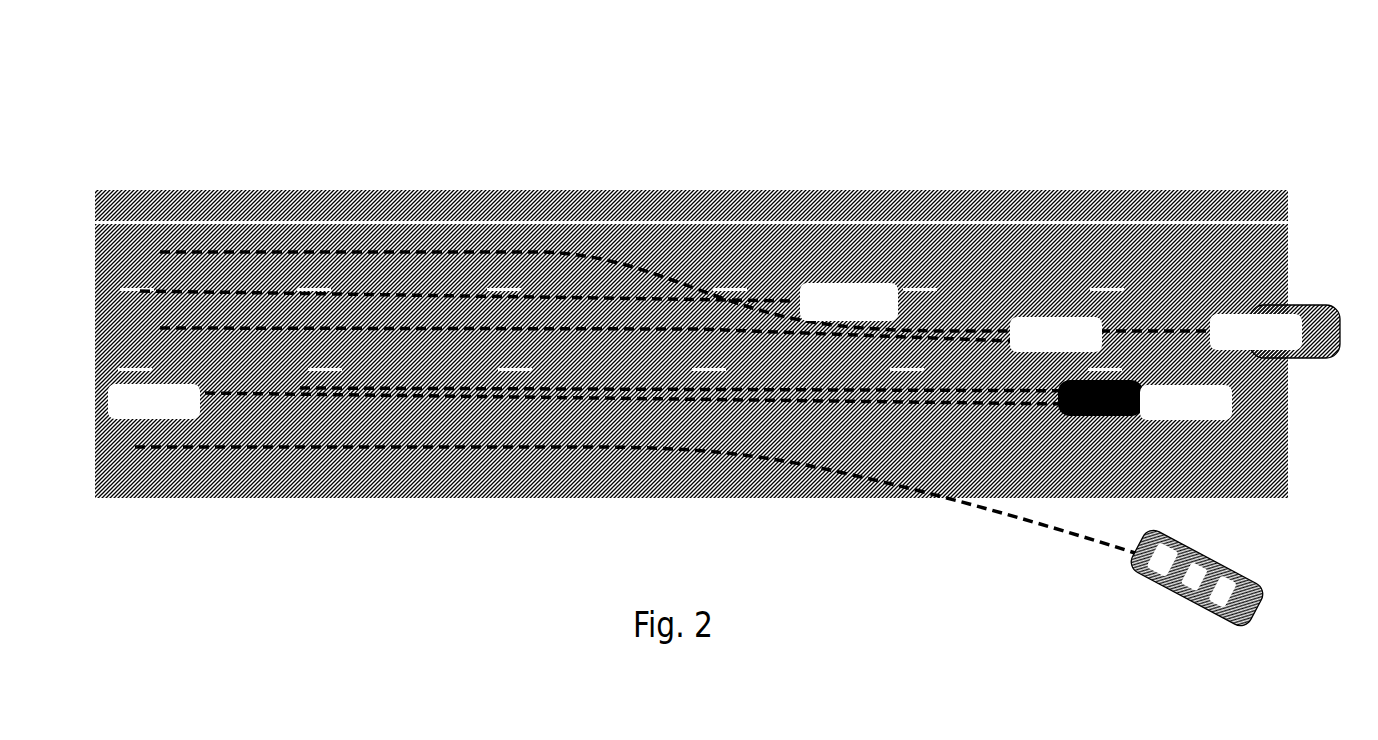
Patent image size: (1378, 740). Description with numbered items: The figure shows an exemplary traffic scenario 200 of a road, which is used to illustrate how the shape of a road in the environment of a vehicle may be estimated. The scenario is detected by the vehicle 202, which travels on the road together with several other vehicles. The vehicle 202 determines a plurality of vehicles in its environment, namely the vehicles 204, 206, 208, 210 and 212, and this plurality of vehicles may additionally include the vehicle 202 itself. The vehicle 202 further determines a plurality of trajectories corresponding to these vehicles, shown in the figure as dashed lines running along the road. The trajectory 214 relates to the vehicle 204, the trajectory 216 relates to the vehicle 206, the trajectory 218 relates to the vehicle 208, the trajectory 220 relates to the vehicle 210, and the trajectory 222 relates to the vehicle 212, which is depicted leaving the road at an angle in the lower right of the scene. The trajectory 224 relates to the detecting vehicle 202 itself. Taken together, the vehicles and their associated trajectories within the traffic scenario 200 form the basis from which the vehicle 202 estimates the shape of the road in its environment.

The traffic scenario 200 is at (237, 101).
The vehicle 202 is at (210, 387).
The vehicle 204 is at (912, 284).
The vehicle 206 is at (1093, 320).
The vehicle 208 is at (1198, 380).
The vehicle 210 is at (1267, 317).
The vehicle 212 is at (1137, 560).
The trajectory 214 is at (500, 292).
The trajectory 216 is at (428, 252).
The trajectory 218 is at (745, 388).
The trajectory 220 is at (540, 328).
The trajectory 222 is at (592, 448).
The trajectory 224 is at (605, 392).